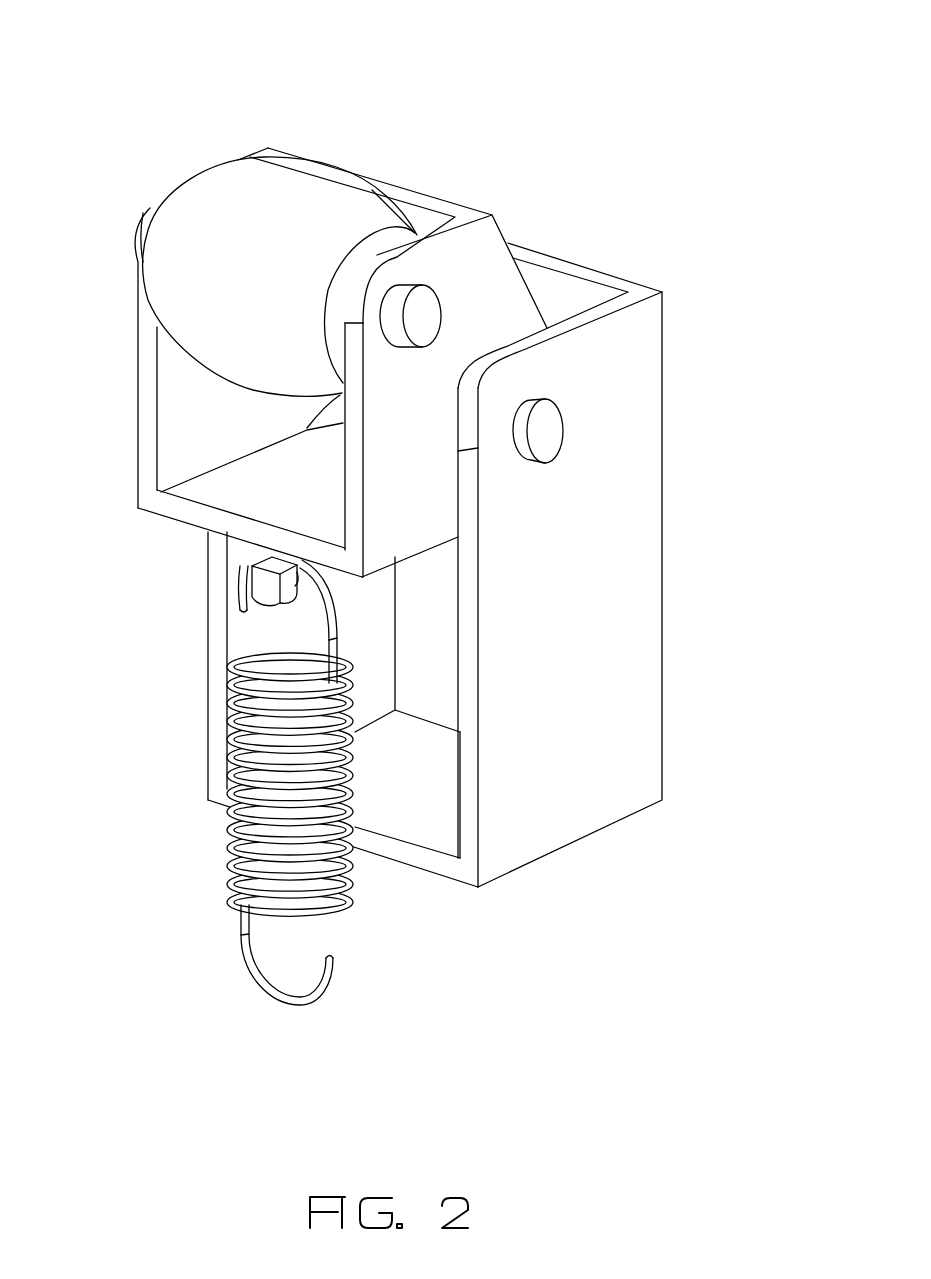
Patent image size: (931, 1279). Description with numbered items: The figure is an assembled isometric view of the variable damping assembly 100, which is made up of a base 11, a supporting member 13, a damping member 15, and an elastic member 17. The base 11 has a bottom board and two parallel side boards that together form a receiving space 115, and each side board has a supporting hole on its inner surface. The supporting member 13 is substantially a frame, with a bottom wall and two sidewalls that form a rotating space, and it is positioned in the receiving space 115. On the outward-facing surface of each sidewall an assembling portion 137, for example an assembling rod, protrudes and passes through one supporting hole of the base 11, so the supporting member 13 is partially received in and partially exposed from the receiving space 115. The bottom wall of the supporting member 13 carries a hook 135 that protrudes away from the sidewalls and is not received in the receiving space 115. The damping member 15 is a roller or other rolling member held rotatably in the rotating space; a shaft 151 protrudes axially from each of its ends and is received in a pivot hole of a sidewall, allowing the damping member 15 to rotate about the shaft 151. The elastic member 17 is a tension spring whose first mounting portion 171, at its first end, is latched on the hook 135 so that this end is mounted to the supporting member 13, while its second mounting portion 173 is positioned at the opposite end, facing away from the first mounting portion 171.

The variable damping assembly 100 is at (412, 40).
The base 11 is at (630, 662).
The receiving space 115 is at (448, 678).
The supporting member 13 is at (437, 399).
The hook 135 is at (272, 590).
The assembling portion 137 is at (556, 432).
The damping member 15 is at (225, 195).
The shaft 151 is at (430, 303).
The elastic member 17 is at (237, 782).
The first mounting portion 171 is at (250, 593).
The second mounting portion 173 is at (263, 978).